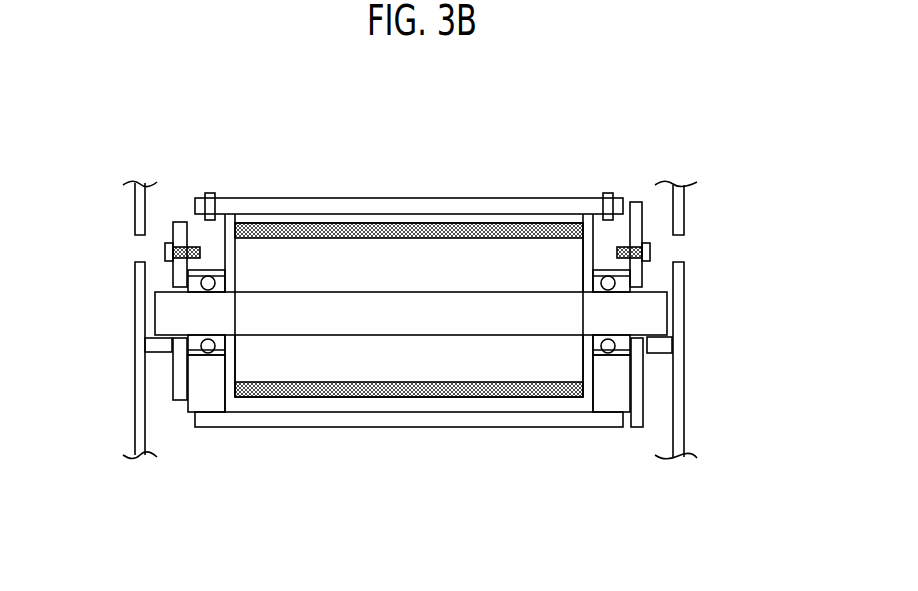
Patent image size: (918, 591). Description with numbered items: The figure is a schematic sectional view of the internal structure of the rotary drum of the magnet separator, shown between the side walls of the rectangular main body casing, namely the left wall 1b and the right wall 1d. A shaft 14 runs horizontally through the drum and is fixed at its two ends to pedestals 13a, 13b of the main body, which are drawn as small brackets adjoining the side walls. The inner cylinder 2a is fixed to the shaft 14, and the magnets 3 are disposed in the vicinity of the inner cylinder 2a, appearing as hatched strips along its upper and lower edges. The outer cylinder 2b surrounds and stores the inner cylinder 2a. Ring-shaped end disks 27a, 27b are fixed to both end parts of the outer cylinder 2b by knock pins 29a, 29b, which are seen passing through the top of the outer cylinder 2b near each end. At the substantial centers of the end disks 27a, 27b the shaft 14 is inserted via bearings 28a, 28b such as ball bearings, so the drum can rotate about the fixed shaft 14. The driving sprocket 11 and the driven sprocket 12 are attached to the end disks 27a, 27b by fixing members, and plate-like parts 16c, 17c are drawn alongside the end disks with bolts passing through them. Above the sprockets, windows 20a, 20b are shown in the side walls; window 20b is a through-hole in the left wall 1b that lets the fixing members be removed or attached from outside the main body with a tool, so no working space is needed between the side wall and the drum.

The left wall 1b is at (695, 365).
The right wall 1d is at (137, 410).
The inner cylinder 2a is at (470, 240).
The outer cylinder 2b is at (357, 208).
The magnets 3 is at (285, 235).
The driving sprocket 11 is at (180, 400).
The driven sprocket 12 is at (637, 428).
The pedestal 13a is at (148, 343).
The pedestal 13b is at (670, 345).
The shaft 14 is at (397, 322).
The fixing plate 16c is at (167, 212).
The fixing plate 17c is at (652, 238).
The window 20a is at (133, 252).
The window 20b is at (678, 247).
The end disk 27a is at (208, 398).
The end disk 27b is at (610, 397).
The bearing 28a is at (218, 348).
The bearing 28b is at (598, 280).
The knock pin 29a is at (211, 193).
The knock pin 29b is at (607, 193).